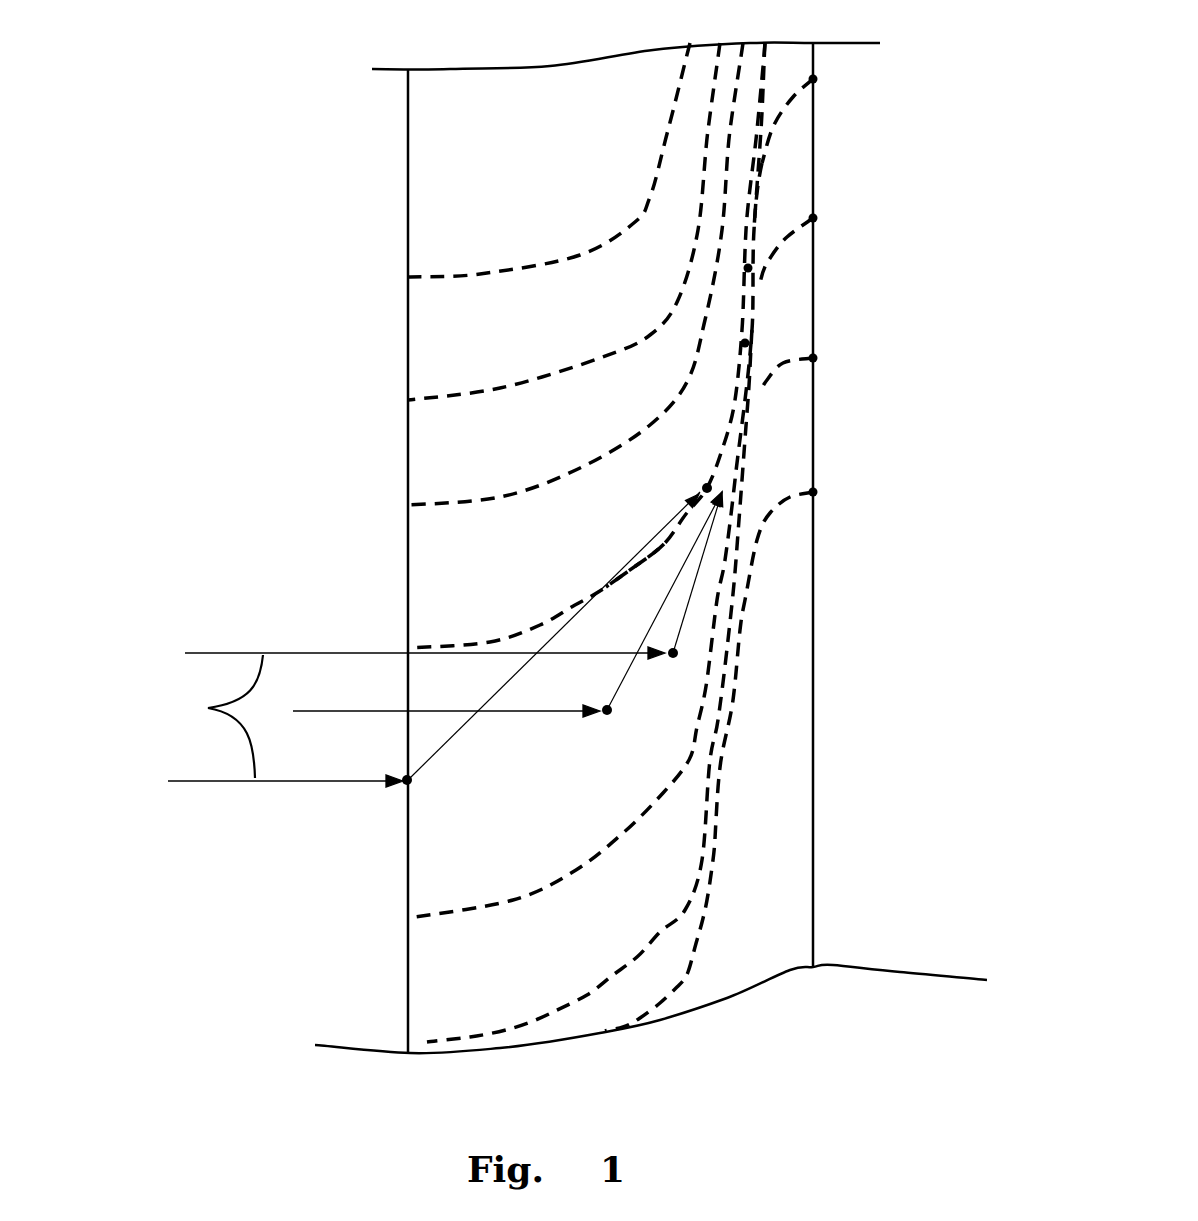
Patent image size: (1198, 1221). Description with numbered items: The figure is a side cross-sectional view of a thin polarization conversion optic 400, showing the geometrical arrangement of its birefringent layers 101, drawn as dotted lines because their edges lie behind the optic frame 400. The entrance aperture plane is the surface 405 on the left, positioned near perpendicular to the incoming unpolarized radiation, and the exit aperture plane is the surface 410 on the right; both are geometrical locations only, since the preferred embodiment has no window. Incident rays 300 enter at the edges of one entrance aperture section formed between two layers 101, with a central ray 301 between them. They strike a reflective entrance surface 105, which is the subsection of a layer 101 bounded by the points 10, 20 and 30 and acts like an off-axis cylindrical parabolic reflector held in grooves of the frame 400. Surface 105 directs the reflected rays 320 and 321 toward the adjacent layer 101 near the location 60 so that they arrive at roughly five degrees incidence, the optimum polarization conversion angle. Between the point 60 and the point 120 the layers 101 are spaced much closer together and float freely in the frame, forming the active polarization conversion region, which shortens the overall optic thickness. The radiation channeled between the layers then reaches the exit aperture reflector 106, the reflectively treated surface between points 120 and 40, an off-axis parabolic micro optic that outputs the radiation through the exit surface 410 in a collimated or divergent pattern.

The point on layer 10 is at (403, 785).
The point on layer 20 is at (607, 710).
The point on layer 30 is at (673, 653).
The point on layer 40 is at (818, 77).
The polarization conversion location 60 is at (704, 485).
The birefringent layer 101 is at (672, 140).
The reflective entrance surface 105 is at (513, 265).
The exit aperture reflector 106 is at (768, 165).
The point on layer 120 is at (745, 343).
The incident rays 300 is at (406, 717).
The central ray 301 is at (380, 712).
The reflected ray 320 is at (690, 580).
The reflected ray 321 is at (670, 560).
The optic frame 400 is at (822, 884).
The entrance aperture surface 405 is at (392, 557).
The exit aperture surface 410 is at (830, 293).